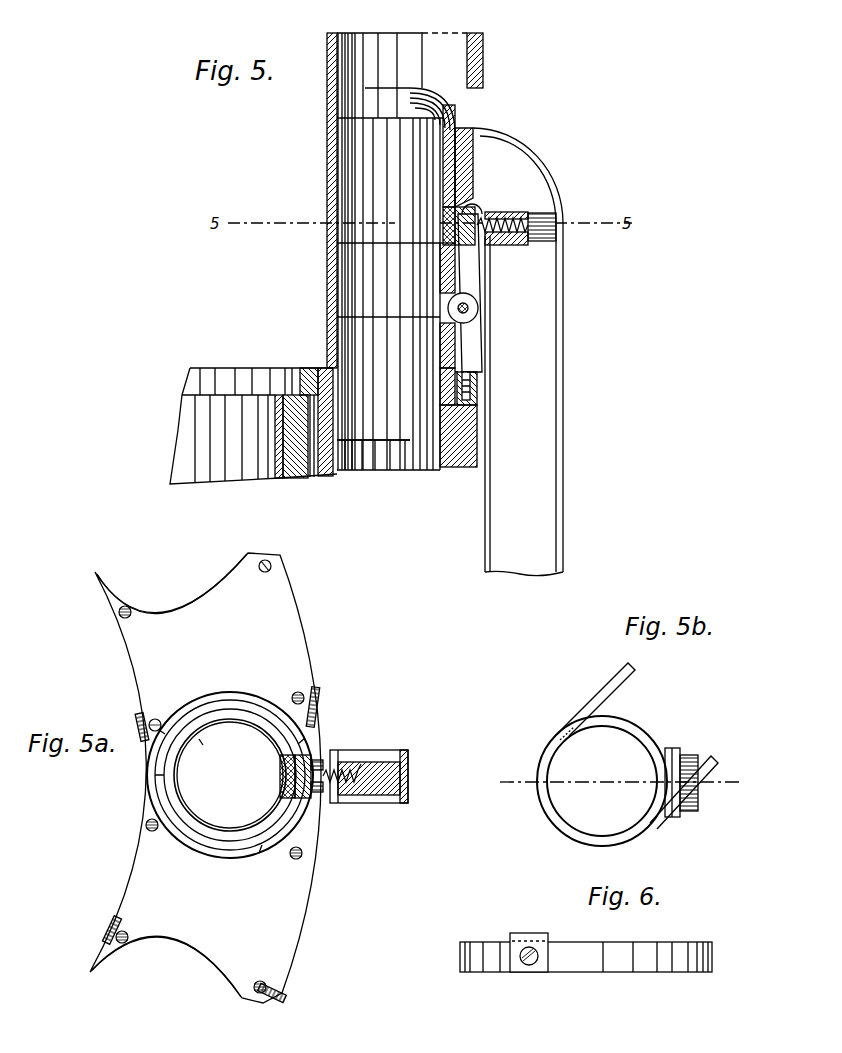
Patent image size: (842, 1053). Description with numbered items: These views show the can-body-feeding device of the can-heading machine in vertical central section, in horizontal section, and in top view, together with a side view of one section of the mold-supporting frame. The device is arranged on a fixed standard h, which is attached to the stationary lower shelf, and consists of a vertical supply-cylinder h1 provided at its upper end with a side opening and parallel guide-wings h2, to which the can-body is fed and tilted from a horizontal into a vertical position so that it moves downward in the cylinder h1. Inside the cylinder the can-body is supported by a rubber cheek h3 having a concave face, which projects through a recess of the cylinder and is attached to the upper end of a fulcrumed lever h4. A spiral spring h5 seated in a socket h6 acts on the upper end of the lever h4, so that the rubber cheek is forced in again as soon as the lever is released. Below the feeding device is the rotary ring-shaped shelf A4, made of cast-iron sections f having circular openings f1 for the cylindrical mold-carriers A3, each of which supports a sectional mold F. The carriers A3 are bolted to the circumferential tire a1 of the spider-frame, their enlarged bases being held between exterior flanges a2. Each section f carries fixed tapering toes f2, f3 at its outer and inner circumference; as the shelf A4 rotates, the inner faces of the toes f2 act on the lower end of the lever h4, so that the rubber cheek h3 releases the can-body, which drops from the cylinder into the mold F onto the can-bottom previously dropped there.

In FIG. 5, the fixed standard h is at (509, 352).
In FIG. 5A, the fixed standard h is at (377, 776).
In FIG. 5B, the fixed standard h is at (681, 796).
In FIG. 5, the vertical supply-cylinder h1 is at (458, 122).
In FIG. 5B, the vertical supply-cylinder h1 is at (594, 777).
In FIG. 5, the parallel guide-wings h2 is at (491, 60).
In FIG. 5B, the parallel guide-wings h2 is at (651, 745).
In FIG. 5, the rubber cheek h3 is at (467, 207).
In FIG. 5A, the rubber cheek h3 is at (280, 776).
In FIG. 5, the fulcrumed lever h4 is at (470, 282).
In FIG. 5A, the fulcrumed lever h4 is at (316, 794).
In FIG. 5, the spiral spring h5 is at (508, 220).
In FIG. 5A, the spiral spring h5 is at (345, 776).
In FIG. 5, the socket h6 is at (520, 239).
In FIG. 5A, the socket h6 is at (346, 796).
In FIG. 6, the section of the ring-shaped top shelf f is at (586, 971).
In FIG. 5A, the opening f1 is at (169, 775).
In FIG. 5, the tapering projection or toe f2 is at (477, 376).
In FIG. 5A, the tapering projection or toe f2 is at (318, 708).
In FIG. 6, the tapering projection or toe f2 is at (533, 940).
In FIG. 5A, the tapering projection or toe f3 is at (142, 713).
In FIG. 5, the sectional mold F is at (380, 478).
In FIG. 5A, the sectional mold F is at (230, 775).
In FIG. 5, the cylindrical mold-carrier A3 is at (373, 439).
In FIG. 5, the ring-shaped shelf A4 is at (503, 398).
In FIG. 5A, the ring-shaped shelf A4 is at (205, 778).
In FIG. 5, the circumferential tire a1 is at (231, 439).
In FIG. 5, the exterior circumferential shoulder or flange a2 is at (290, 381).